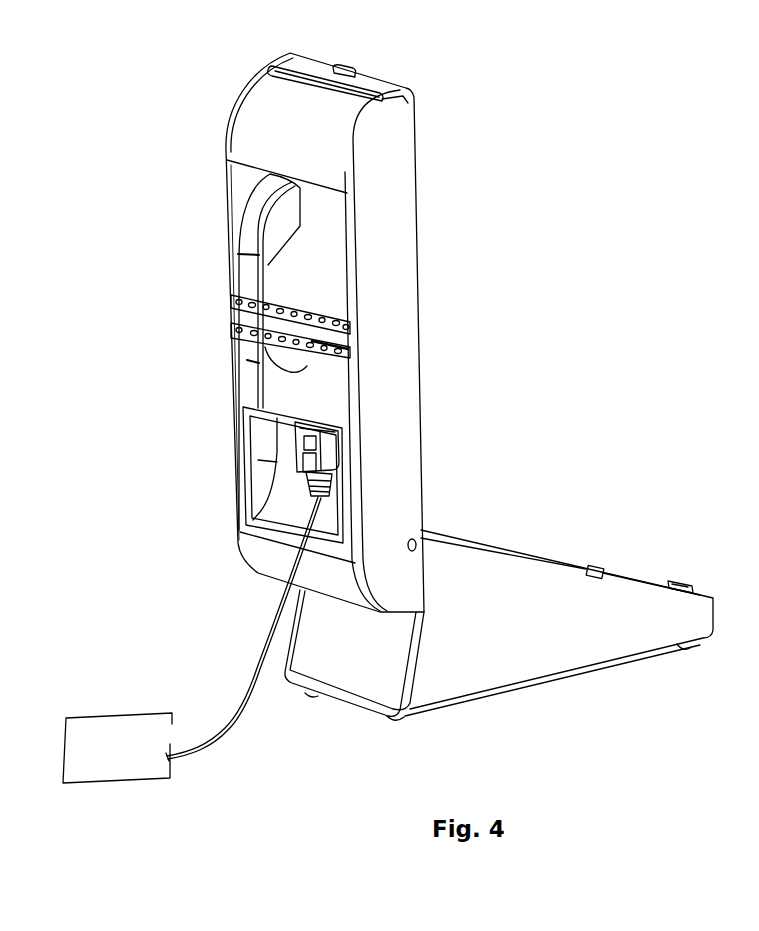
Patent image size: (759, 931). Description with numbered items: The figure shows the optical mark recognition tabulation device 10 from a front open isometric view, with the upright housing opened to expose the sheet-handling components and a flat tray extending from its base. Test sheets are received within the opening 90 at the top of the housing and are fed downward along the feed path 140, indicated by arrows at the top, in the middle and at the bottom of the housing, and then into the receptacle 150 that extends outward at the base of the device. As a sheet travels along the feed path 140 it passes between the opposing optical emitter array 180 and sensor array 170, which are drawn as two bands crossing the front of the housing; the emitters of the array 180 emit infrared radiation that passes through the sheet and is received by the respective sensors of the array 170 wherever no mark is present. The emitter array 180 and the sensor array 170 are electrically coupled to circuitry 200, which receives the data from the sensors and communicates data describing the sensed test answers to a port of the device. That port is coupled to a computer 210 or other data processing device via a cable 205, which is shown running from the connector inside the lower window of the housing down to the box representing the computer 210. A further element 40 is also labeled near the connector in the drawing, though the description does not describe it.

The optical mark recognition tabulation device 10 is at (148, 332).
The mounting bracket 40 is at (312, 427).
The opening 90 is at (364, 91).
The feed path 140 is at (315, 13).
The receptacle 150 is at (583, 568).
The array of optical sensors 170 is at (352, 322).
The array of optical emitters 180 is at (347, 347).
The circuitry 200 is at (310, 428).
The cable 205 is at (251, 668).
The computer 210 is at (117, 748).